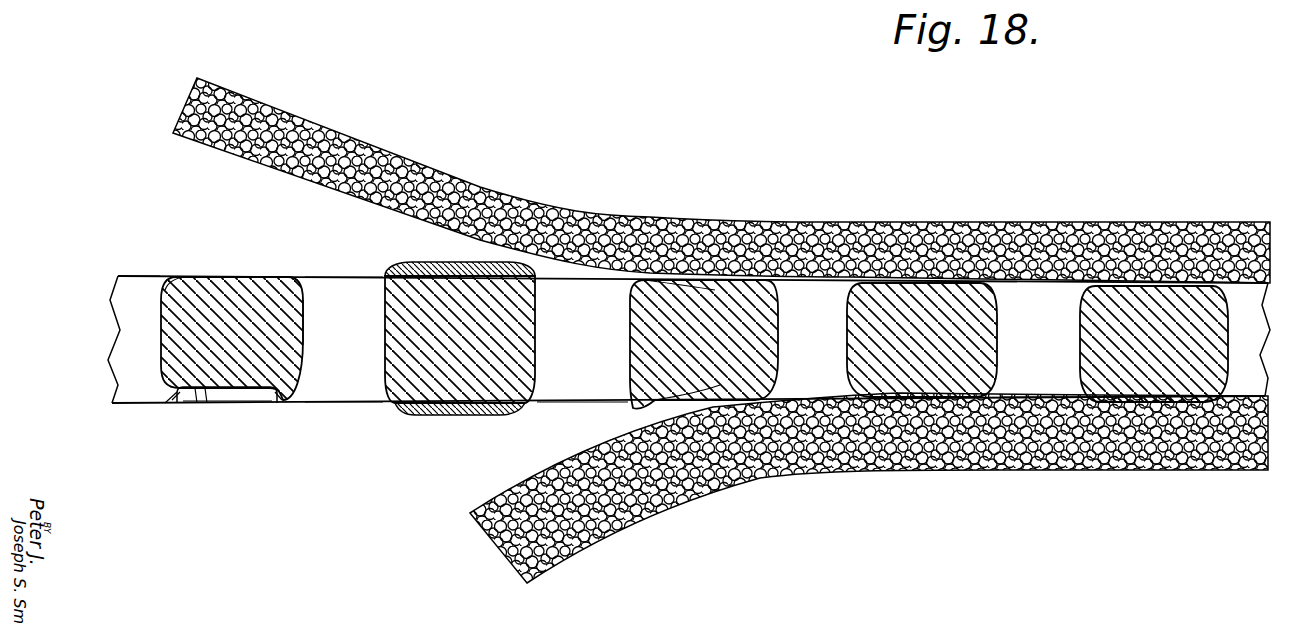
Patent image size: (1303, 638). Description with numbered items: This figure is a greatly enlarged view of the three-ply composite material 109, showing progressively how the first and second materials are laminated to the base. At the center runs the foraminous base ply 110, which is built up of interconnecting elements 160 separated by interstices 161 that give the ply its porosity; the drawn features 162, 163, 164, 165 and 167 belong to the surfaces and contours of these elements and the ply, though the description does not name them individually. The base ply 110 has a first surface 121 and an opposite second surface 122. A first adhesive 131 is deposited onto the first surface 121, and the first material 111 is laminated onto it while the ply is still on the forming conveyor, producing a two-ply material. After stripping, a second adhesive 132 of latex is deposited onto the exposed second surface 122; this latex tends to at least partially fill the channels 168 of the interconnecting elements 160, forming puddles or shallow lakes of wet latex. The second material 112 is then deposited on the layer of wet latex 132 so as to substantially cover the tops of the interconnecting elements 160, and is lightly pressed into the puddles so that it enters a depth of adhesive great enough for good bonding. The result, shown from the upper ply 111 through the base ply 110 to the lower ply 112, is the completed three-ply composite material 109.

The three-ply composite material 109 is at (1048, 500).
The foraminous base ply 110 is at (138, 322).
The first material 111 is at (190, 100).
The second material 112 is at (495, 550).
The first surface 121 is at (215, 276).
The second surface 122 is at (205, 405).
The first adhesive 131 is at (422, 266).
The second adhesive 132 is at (458, 417).
The interconnecting elements 160 is at (240, 305).
The interstices 161 is at (337, 365).
The top surface 162 is at (236, 276).
The side wall 163 is at (195, 405).
The side surface 164 is at (306, 330).
The strip surface 165 is at (150, 278).
The corner 167 is at (178, 405).
The channels 168 is at (225, 405).